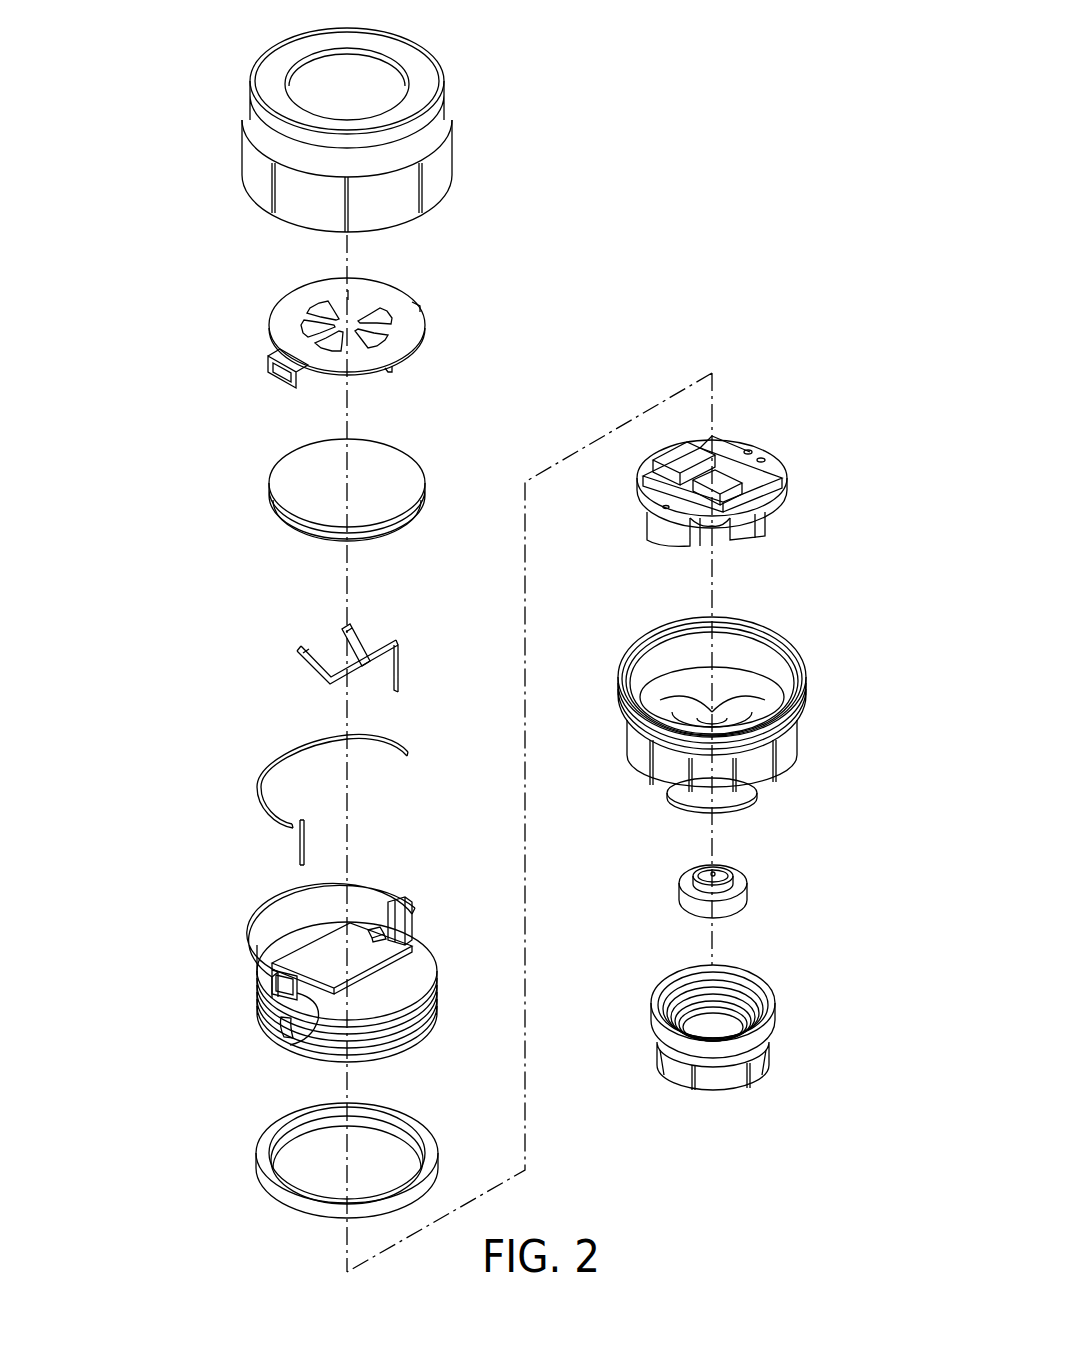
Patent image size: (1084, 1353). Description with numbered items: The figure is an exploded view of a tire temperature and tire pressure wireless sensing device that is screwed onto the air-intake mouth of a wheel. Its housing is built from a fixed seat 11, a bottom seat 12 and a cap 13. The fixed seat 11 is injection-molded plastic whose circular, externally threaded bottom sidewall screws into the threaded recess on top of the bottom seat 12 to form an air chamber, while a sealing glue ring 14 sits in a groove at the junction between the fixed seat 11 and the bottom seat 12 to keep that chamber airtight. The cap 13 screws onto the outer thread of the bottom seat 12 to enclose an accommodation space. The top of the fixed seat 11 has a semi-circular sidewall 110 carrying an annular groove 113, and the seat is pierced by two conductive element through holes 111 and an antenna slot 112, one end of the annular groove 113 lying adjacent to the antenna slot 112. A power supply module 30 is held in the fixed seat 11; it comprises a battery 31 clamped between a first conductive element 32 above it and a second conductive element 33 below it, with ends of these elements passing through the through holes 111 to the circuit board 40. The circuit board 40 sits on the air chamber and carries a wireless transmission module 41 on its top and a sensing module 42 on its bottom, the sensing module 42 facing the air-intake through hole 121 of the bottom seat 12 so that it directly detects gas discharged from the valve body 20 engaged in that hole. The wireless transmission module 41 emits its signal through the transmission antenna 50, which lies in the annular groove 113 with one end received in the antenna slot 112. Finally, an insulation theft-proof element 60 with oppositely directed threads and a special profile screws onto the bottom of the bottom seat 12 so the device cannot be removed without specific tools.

The fixed seat 11 is at (324, 973).
The semi-circular sidewall 110 is at (268, 918).
The conductive element through hole 111 is at (396, 900).
The antenna slot 112 is at (293, 1022).
The annular groove 113 is at (290, 1003).
The bottom seat 12 is at (703, 710).
The air-intake through hole 121 is at (687, 700).
The cap 13 is at (262, 50).
The sealing glue ring 14 is at (255, 1152).
The valve body 20 is at (748, 888).
The power supply module 30 is at (200, 652).
The battery 31 is at (270, 478).
The first conductive element 32 is at (270, 322).
The second conductive element 33 is at (297, 649).
The circuit board 40 is at (715, 488).
The wireless transmission module 41 is at (665, 442).
The sensing module 42 is at (667, 540).
The transmission antenna 50 is at (283, 750).
The insulation theft-proof element 60 is at (777, 1013).